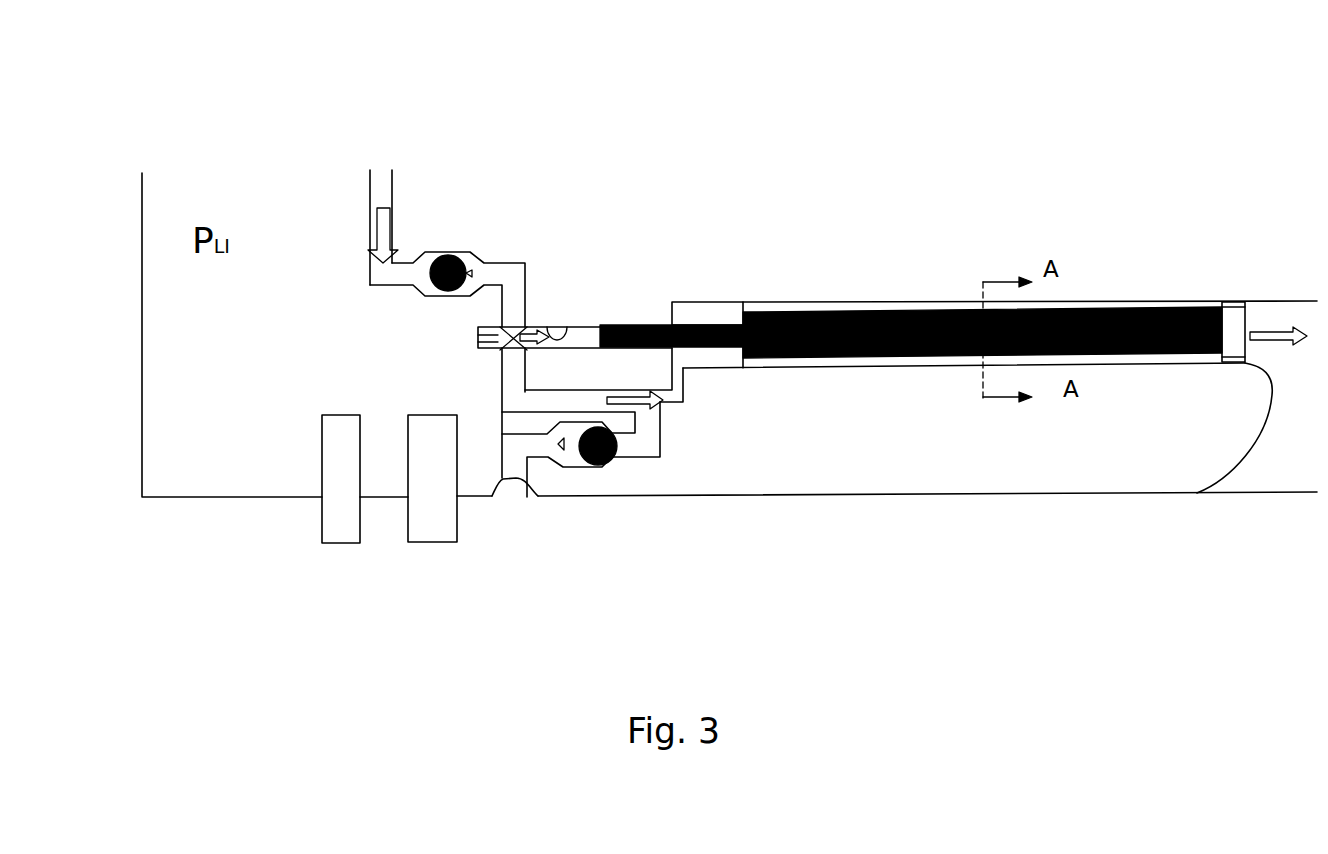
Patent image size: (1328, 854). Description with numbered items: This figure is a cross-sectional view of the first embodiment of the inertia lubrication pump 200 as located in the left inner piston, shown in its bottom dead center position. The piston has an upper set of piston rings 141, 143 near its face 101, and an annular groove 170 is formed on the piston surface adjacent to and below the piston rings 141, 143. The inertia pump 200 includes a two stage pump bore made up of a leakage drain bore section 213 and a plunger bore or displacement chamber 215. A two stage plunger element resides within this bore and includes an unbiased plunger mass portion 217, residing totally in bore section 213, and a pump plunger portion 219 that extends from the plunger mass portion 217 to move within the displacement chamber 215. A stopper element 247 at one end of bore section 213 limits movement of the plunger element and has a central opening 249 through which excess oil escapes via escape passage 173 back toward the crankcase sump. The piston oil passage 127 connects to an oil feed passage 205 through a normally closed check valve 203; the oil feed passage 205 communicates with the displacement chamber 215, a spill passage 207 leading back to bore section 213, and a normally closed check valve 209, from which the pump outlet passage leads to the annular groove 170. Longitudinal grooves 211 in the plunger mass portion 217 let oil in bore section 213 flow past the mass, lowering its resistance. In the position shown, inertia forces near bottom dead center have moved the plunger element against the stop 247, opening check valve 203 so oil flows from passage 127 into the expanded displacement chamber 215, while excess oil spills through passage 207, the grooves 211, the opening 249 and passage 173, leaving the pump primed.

The inertia lubrication pump 200 is at (246, 156).
The face 101 is at (138, 248).
The piston oil passage 127 is at (391, 240).
The check valve 203 is at (468, 252).
The oil feed passage 205 is at (515, 275).
The displacement chamber 215 is at (567, 323).
The pump plunger portion 219 is at (636, 321).
The leakage drain bore section 213 is at (684, 308).
The plunger mass portion 217 is at (918, 302).
The escape passage 173 is at (1283, 322).
The central opening 249 is at (1250, 303).
The grooves 211 is at (513, 447).
The spill passage 207 is at (686, 403).
The check valve 209 is at (575, 468).
The annular groove 170 is at (500, 482).
The piston ring 141 is at (322, 543).
The piston ring 143 is at (408, 542).
The stopper element 247 is at (1197, 493).